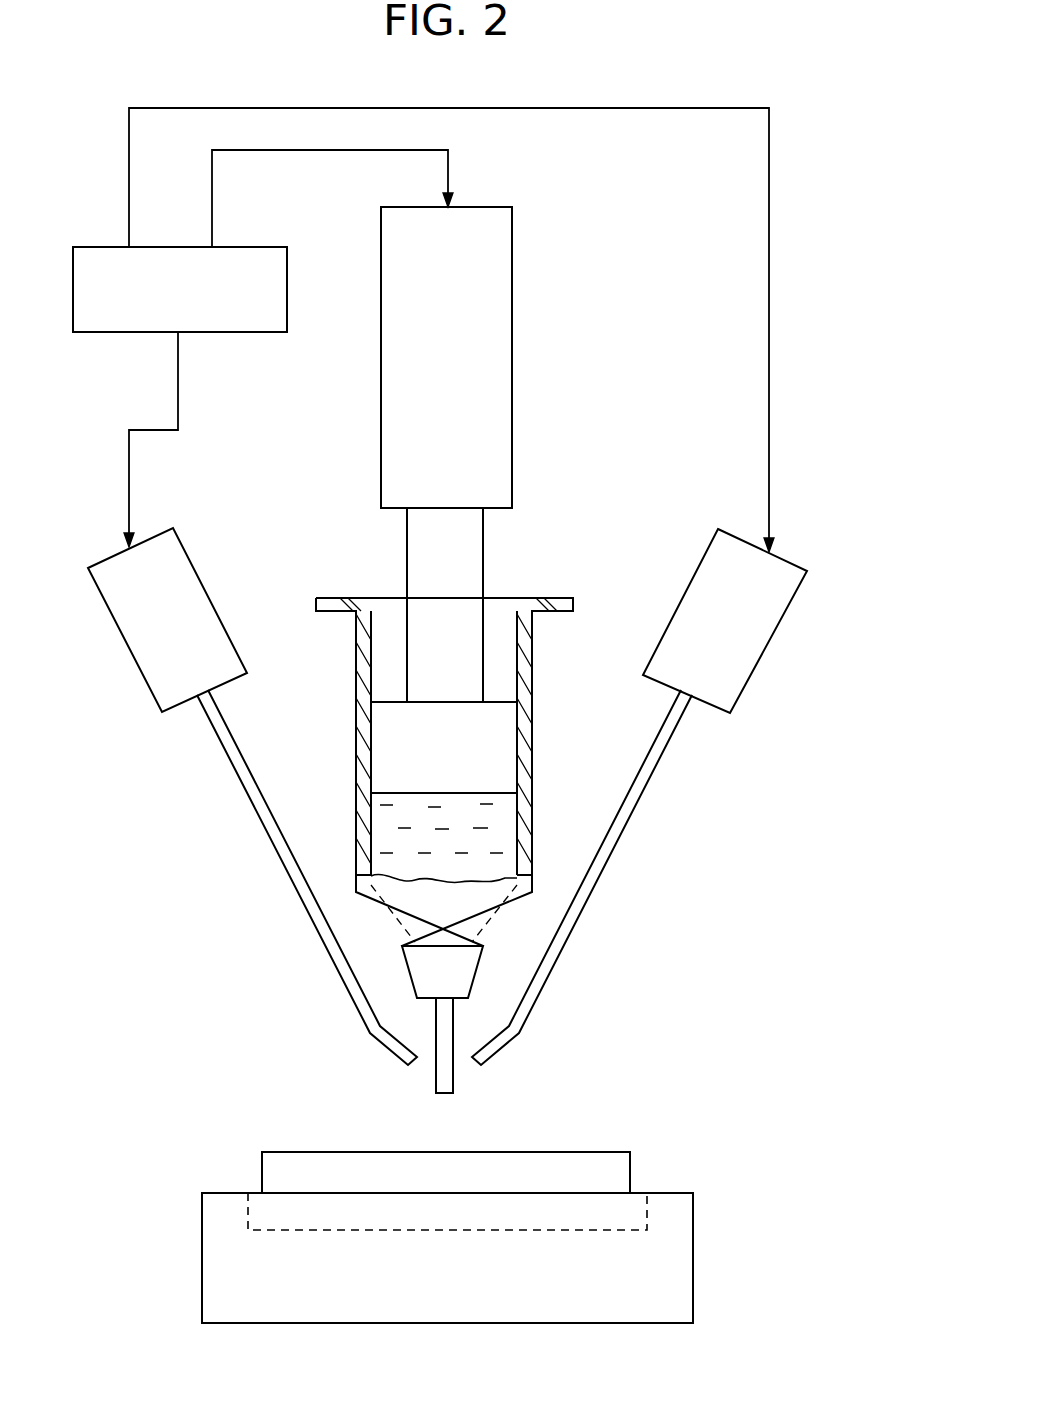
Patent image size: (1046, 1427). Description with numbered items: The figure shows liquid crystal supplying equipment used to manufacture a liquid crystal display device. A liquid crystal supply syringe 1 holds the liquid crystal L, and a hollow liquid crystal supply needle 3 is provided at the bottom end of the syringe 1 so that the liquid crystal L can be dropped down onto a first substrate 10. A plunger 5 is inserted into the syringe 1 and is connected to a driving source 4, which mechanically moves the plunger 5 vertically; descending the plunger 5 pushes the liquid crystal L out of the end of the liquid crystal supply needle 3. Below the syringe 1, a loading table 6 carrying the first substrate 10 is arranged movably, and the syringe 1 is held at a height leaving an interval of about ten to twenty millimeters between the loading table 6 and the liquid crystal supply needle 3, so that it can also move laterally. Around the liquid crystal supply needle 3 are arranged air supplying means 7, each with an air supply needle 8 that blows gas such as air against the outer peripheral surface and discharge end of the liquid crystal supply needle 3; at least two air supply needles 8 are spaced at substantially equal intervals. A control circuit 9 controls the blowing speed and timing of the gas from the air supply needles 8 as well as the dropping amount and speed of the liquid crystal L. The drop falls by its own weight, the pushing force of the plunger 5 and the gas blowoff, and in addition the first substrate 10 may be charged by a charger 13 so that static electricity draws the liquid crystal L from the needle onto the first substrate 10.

The liquid crystal supply syringe 1 is at (552, 548).
The liquid crystal supply needle 3 is at (447, 1080).
The driving source 4 is at (512, 376).
The plunger 5 is at (497, 742).
The loading table 6 is at (683, 1240).
The air supplying means 7 is at (212, 598).
The air supply needle 8 is at (268, 832).
The control circuit 9 is at (251, 332).
The first substrate 10 is at (630, 1170).
The charger 13 is at (248, 1225).
The liquid crystal L is at (505, 835).